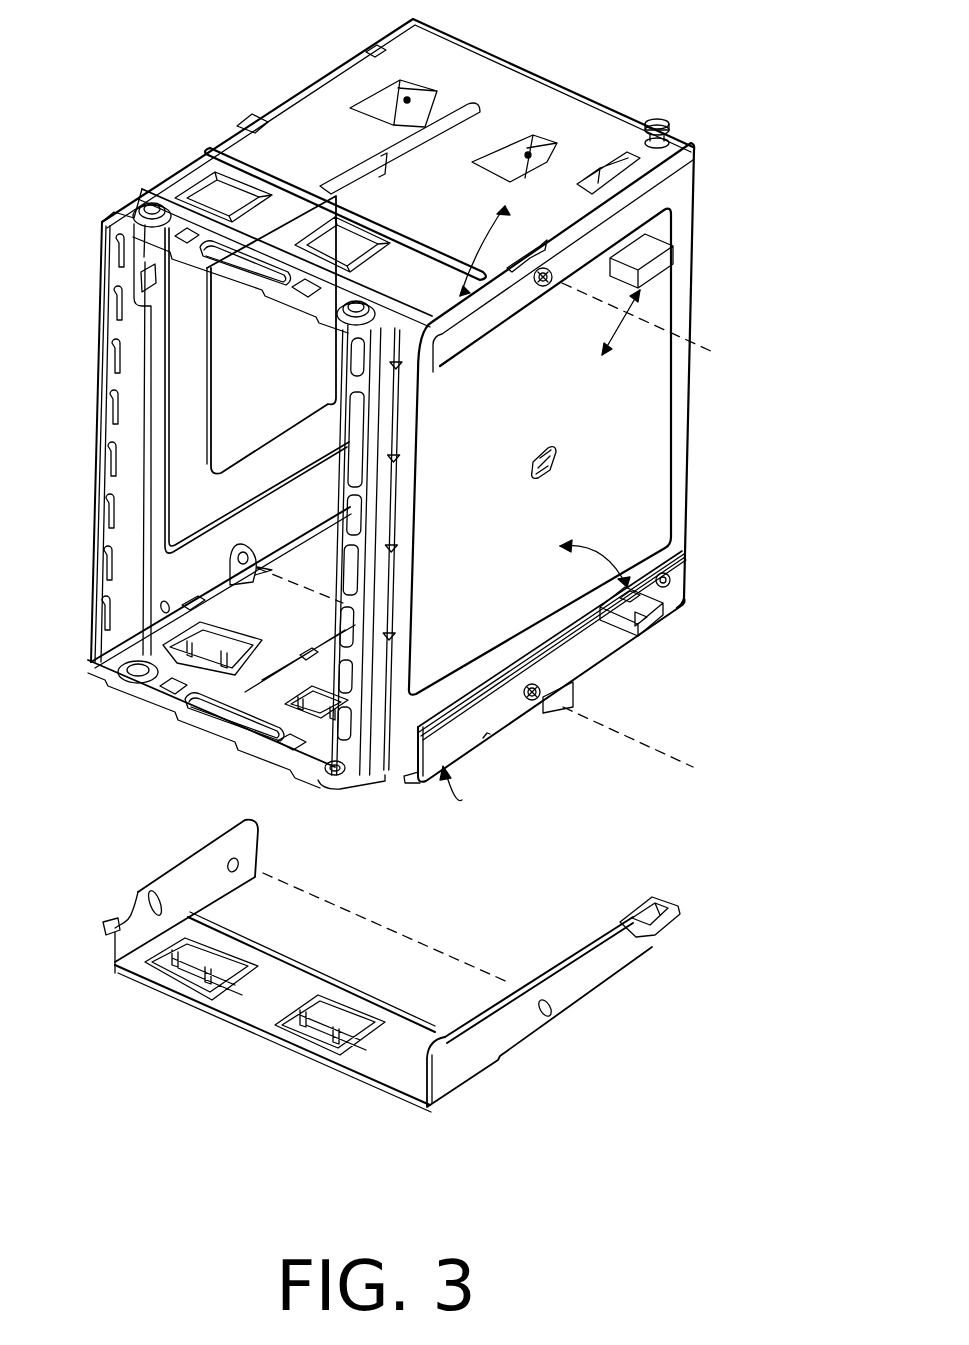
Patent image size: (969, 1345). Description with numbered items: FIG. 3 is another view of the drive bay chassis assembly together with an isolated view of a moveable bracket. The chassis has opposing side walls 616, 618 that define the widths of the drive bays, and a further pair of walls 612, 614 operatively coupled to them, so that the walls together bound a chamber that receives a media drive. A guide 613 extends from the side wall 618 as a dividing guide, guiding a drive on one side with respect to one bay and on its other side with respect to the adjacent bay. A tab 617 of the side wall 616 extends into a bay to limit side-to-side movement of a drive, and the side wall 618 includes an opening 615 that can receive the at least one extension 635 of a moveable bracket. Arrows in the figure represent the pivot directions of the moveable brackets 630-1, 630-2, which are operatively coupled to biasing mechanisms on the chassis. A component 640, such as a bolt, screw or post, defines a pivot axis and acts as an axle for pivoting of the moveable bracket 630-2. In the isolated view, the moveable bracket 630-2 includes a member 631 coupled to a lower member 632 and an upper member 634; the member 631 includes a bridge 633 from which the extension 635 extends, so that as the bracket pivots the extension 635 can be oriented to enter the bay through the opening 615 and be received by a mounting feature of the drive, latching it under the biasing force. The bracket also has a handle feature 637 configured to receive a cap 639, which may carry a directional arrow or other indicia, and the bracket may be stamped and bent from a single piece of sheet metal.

The wall 612 is at (222, 507).
The dividing guide 613 is at (272, 690).
The wall 614 is at (473, 508).
The opening 615 is at (312, 724).
The side wall 616 is at (297, 631).
The tab 617 is at (527, 152).
The side wall 618 is at (470, 210).
The moveable bracket 630-1 is at (457, 352).
The moveable bracket 630-2 is at (590, 657).
The member 631 is at (250, 1017).
The lower member 632 is at (187, 870).
The bridge 633 is at (328, 1015).
The upper member 634 is at (495, 1037).
The extension 635 is at (343, 1028).
The handle feature 637 is at (673, 923).
The cap 639 is at (655, 604).
The component 640 is at (531, 705).